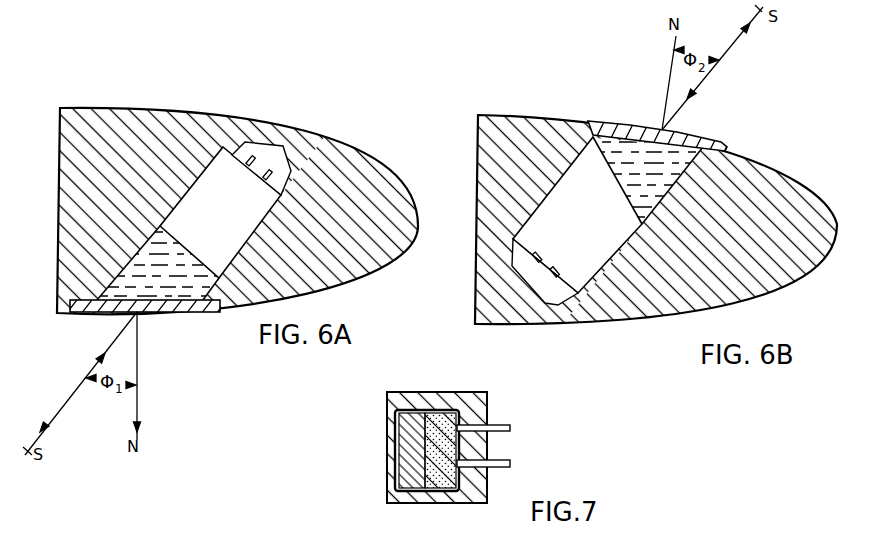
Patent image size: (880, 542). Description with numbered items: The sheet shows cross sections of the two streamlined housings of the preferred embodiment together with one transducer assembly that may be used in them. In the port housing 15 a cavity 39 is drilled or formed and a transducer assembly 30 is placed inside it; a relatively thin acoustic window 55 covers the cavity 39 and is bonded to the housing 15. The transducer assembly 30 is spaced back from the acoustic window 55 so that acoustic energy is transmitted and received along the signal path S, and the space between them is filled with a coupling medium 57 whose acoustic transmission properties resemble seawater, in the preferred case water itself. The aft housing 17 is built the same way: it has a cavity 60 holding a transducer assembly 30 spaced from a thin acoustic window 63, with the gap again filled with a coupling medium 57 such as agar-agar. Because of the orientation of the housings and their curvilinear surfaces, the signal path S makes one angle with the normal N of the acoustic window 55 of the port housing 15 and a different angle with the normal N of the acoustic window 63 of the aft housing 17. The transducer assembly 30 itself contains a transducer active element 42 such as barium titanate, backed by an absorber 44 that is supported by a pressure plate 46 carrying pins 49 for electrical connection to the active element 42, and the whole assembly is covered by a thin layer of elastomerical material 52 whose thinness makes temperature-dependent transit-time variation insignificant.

In FIG. 6A, the port housing 15 is at (373, 160).
In FIG. 6B, the aft housing 17 is at (806, 176).
In FIG. 6A, the transducer assembly 30 is at (216, 163).
In FIG. 6B, the transducer assembly 30 is at (538, 208).
In FIG. 6A, the cavity 39 is at (148, 236).
In FIG. 6A, the acoustic window 55 is at (195, 310).
In FIG. 6A, the coupling medium 57 is at (124, 271).
In FIG. 6B, the coupling medium 57 is at (661, 199).
In FIG. 6B, the cavity 60 is at (568, 172).
In FIG. 6B, the acoustic window 63 is at (706, 141).
In FIG. 7, the transducer active element 42 is at (408, 410).
In FIG. 7, the absorber 44 is at (436, 409).
In FIG. 7, the pressure plate 46 is at (487, 409).
In FIG. 7, the pins 49 is at (508, 428).
In FIG. 7, the elastomerical material 52 is at (388, 473).